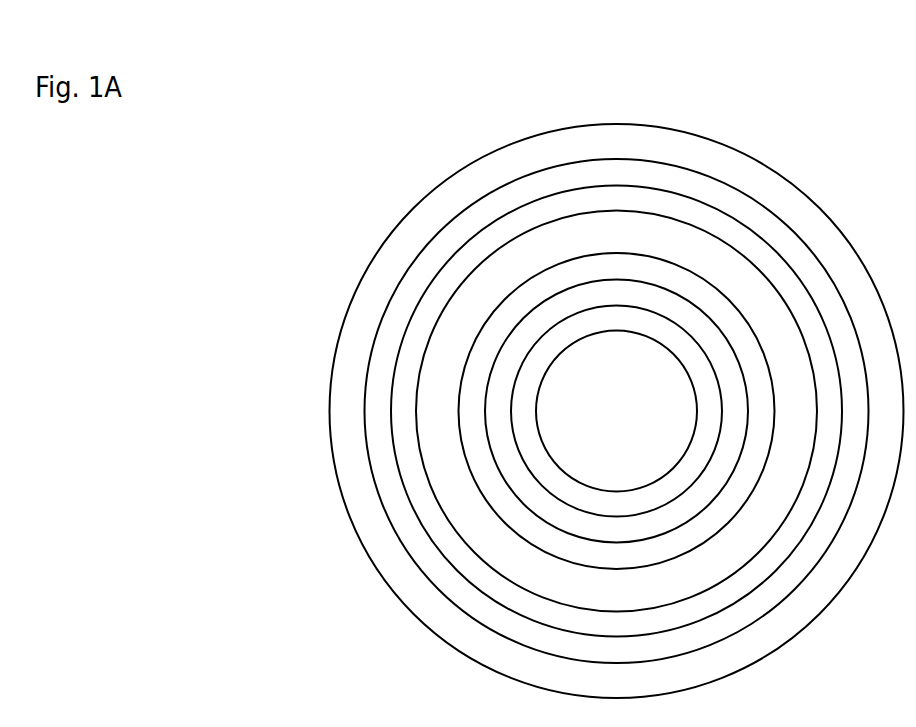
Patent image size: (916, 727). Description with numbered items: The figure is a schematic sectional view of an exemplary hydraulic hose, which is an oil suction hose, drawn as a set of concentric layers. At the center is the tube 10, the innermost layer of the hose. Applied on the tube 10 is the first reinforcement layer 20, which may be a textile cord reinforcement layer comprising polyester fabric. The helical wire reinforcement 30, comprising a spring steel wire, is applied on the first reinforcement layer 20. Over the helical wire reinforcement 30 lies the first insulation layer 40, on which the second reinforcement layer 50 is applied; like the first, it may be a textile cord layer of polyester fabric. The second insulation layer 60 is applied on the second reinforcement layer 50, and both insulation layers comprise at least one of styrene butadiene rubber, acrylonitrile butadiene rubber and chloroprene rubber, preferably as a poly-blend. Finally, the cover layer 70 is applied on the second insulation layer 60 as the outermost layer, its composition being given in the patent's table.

The tube 10 is at (528, 410).
The first reinforcement layer 20 is at (510, 358).
The helical wire reinforcement 30 is at (517, 315).
The first insulation layer 40 is at (553, 250).
The second reinforcement layer 50 is at (634, 193).
The second insulation layer 60 is at (710, 192).
The cover layer 70 is at (783, 203).